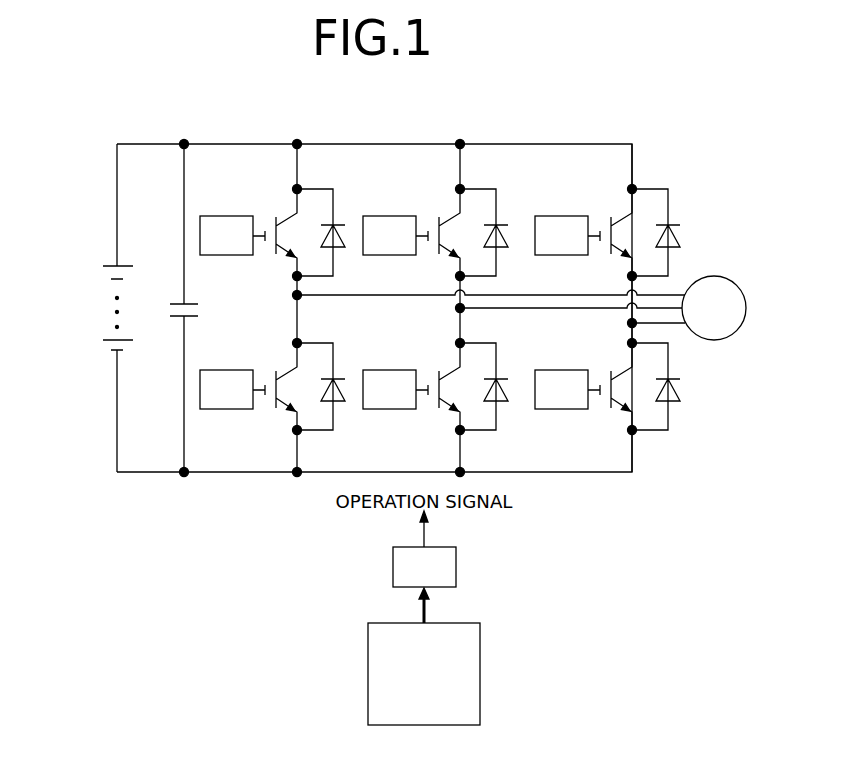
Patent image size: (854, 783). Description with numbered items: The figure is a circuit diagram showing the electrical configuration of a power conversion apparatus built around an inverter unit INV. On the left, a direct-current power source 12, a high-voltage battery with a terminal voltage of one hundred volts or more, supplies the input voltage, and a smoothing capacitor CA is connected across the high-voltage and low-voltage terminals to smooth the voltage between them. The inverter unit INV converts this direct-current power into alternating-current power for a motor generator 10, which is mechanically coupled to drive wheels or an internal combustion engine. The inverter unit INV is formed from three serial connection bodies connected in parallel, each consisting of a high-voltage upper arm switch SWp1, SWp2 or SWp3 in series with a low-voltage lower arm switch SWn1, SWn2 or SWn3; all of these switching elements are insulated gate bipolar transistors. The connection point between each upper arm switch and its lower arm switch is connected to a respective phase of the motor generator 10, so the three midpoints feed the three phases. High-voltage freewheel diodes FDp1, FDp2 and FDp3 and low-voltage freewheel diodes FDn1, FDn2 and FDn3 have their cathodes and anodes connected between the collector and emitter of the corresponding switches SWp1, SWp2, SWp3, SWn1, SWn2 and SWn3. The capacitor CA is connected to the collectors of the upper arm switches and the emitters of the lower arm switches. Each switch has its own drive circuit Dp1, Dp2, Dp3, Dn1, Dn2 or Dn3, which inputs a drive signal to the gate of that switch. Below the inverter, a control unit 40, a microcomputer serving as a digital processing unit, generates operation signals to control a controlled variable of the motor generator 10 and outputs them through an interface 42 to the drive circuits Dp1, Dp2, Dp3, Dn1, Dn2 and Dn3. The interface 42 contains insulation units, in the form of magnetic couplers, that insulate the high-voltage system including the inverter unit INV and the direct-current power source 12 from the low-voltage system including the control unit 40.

The inverter unit INV is at (672, 132).
The direct-current power source 12 is at (114, 266).
The capacitor CA is at (192, 297).
The motor generator 10 is at (712, 276).
The high-voltage switching element SWp1 is at (292, 213).
The high-voltage switching element SWp2 is at (455, 213).
The high-voltage switching element SWp3 is at (627, 213).
The low-voltage switching element SWn1 is at (292, 368).
The low-voltage switching element SWn2 is at (455, 368).
The low-voltage switching element SWn3 is at (627, 368).
The high-voltage freewheel diode FDp1 is at (336, 222).
The high-voltage freewheel diode FDp2 is at (499, 222).
The high-voltage freewheel diode FDp3 is at (671, 224).
The low-voltage freewheel diode FDn1 is at (336, 376).
The low-voltage freewheel diode FDn2 is at (499, 376).
The low-voltage freewheel diode FDn3 is at (671, 378).
The drive circuit Dp1 is at (232, 235).
The drive circuit Dp2 is at (395, 235).
The drive circuit Dp3 is at (567, 235).
The drive circuit Dn1 is at (232, 389).
The drive circuit Dn2 is at (395, 389).
The drive circuit Dn3 is at (567, 389).
The interface 42 is at (456, 575).
The control unit 40 is at (480, 712).